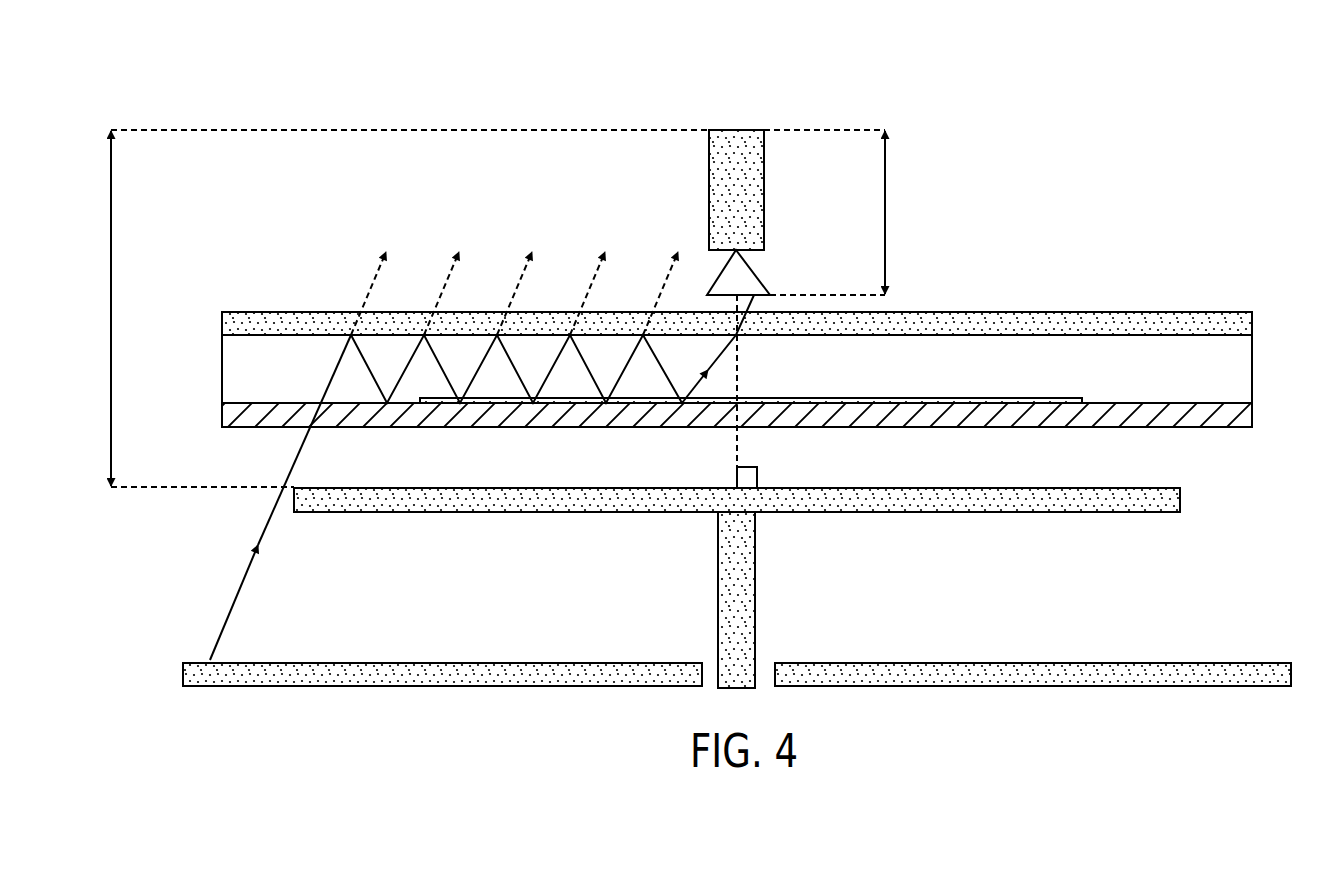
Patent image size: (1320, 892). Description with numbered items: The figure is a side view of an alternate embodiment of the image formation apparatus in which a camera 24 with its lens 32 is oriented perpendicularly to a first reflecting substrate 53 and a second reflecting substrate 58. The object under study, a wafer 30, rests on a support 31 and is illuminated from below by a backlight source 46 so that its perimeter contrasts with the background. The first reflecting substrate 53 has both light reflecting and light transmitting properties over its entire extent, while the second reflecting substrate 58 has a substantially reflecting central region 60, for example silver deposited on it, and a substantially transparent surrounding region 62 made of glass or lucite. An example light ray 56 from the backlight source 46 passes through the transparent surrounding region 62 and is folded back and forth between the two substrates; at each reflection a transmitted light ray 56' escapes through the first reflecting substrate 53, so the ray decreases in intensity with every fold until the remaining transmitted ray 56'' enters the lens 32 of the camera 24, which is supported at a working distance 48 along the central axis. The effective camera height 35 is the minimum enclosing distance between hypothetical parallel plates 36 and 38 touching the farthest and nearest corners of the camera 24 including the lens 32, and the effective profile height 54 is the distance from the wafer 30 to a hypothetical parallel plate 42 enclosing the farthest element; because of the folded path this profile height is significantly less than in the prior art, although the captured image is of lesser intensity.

The camera 24 is at (740, 130).
The wafer 30 is at (1024, 488).
The support 31 is at (718, 600).
The lens 32 is at (718, 278).
The effective camera height 35 is at (886, 224).
The hypothetical plate 36 is at (823, 129).
The hypothetical plate 38 is at (845, 293).
The hypothetical parallel plate 42 is at (323, 129).
The backlight source 46 is at (470, 662).
The working distance 48 is at (742, 356).
The first reflecting substrate 53 is at (1031, 309).
The effective profile height 54 is at (112, 332).
The light ray 56 is at (430, 497).
The transmitted light ray 56' is at (503, 291).
The transmitted ray 56'' is at (708, 342).
The second reflecting substrate 58 is at (1181, 430).
The substantially reflecting central region 60 is at (906, 399).
The substantially transparent surrounding region 62 is at (256, 403).